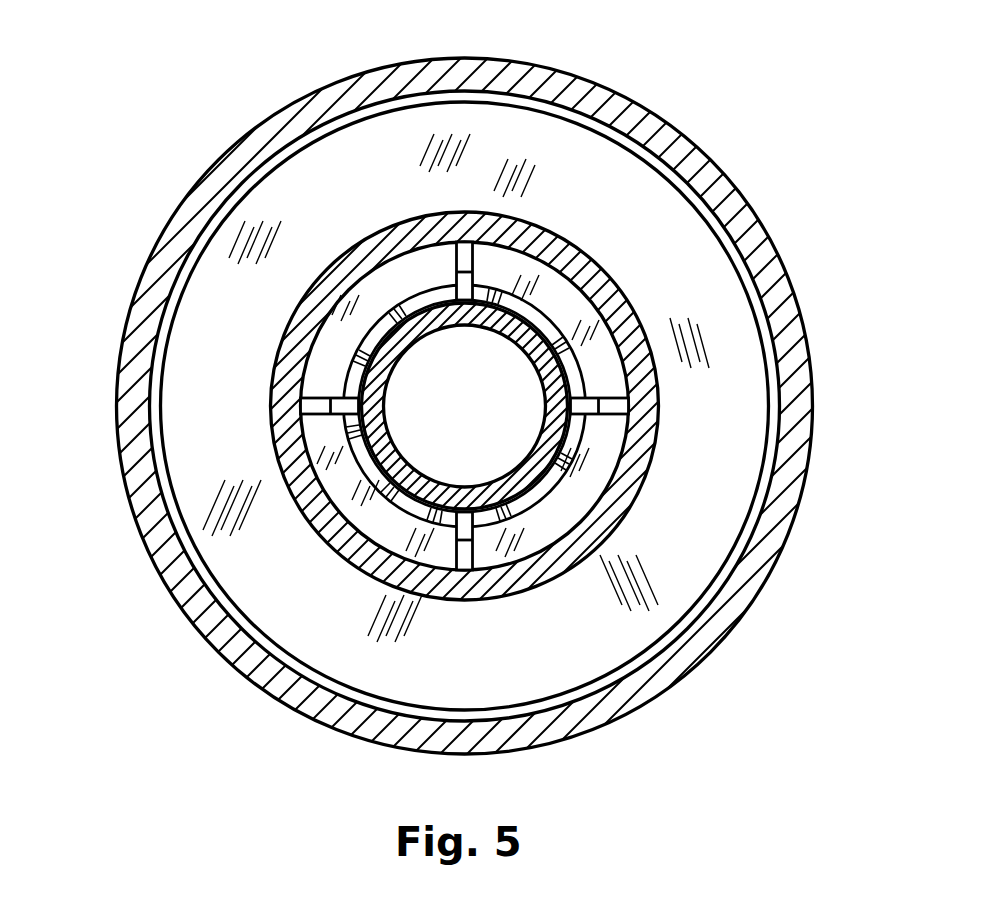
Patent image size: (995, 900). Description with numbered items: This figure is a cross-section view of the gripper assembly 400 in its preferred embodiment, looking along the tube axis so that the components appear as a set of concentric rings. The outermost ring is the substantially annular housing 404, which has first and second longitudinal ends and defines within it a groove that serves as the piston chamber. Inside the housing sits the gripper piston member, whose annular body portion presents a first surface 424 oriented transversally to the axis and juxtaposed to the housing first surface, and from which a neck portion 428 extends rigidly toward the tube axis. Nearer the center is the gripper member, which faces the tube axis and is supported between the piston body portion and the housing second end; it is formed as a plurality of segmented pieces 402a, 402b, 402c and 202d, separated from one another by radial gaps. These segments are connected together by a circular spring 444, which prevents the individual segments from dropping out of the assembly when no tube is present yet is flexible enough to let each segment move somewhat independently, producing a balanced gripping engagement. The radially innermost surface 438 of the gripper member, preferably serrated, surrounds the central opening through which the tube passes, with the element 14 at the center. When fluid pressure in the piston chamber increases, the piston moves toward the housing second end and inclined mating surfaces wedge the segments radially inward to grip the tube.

The gripper assembly 400 is at (288, 78).
The housing 404 is at (229, 151).
The first surface 424 is at (200, 352).
The bearing pad segment 202d is at (398, 272).
The segmented piece 402a is at (553, 297).
The segmented piece 402b is at (543, 528).
The segmented piece 402c is at (353, 510).
The neck portion 428 is at (268, 408).
The radially innermost surface 438 is at (583, 342).
The circular spring 444 is at (590, 397).
The shaft sleeve 14 is at (370, 447).